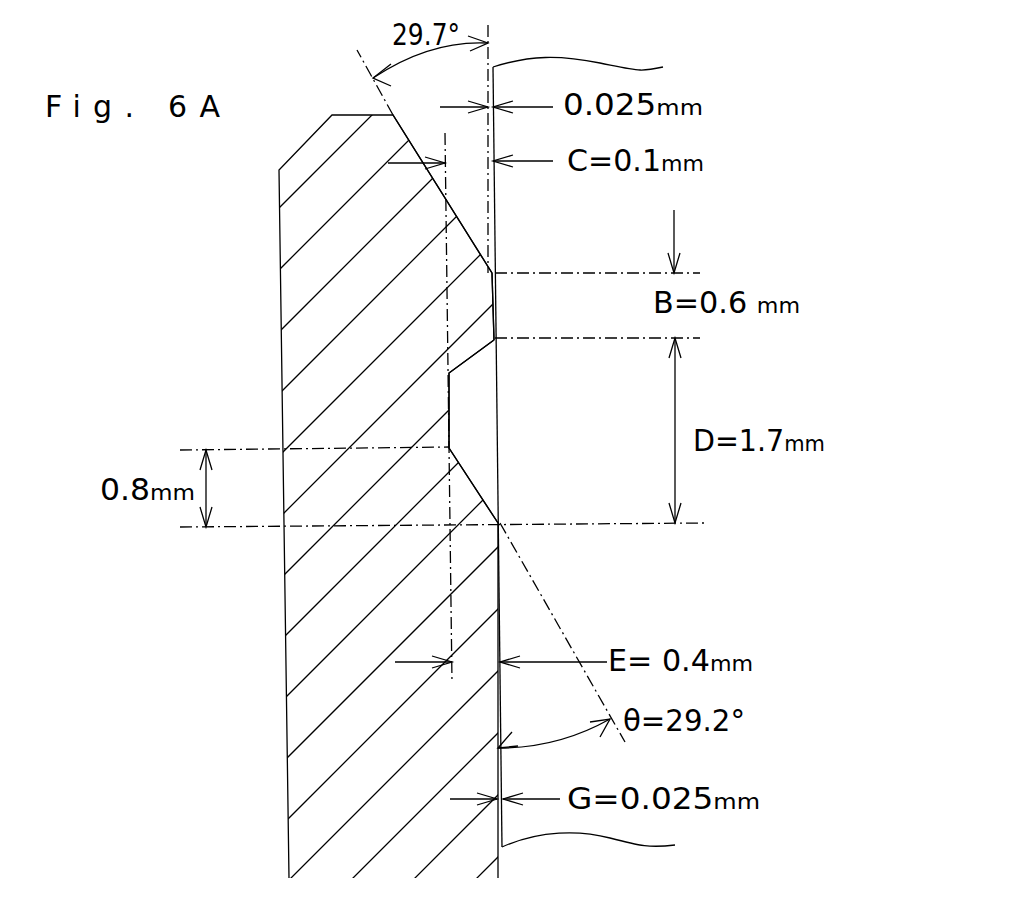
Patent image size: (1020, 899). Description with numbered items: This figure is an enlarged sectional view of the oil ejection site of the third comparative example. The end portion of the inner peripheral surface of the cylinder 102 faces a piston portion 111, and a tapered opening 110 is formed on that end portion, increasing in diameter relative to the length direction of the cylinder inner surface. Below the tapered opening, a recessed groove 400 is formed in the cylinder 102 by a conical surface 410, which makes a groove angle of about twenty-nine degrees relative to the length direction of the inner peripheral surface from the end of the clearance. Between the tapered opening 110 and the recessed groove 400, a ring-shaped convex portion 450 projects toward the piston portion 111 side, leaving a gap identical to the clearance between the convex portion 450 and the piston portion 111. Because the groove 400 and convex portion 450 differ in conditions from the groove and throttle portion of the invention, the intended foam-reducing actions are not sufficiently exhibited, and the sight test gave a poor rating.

The cylinder 102 is at (287, 295).
The tapered opening 110 is at (396, 117).
The piston portion 111 is at (560, 65).
The ring-shaped convex portion 450 is at (495, 307).
The recessed groove 400 is at (450, 418).
The conical surface 410 is at (463, 470).